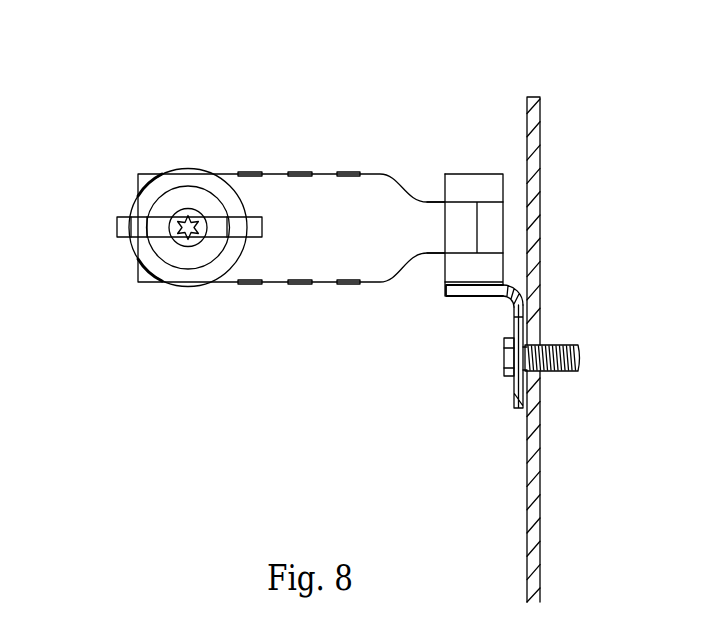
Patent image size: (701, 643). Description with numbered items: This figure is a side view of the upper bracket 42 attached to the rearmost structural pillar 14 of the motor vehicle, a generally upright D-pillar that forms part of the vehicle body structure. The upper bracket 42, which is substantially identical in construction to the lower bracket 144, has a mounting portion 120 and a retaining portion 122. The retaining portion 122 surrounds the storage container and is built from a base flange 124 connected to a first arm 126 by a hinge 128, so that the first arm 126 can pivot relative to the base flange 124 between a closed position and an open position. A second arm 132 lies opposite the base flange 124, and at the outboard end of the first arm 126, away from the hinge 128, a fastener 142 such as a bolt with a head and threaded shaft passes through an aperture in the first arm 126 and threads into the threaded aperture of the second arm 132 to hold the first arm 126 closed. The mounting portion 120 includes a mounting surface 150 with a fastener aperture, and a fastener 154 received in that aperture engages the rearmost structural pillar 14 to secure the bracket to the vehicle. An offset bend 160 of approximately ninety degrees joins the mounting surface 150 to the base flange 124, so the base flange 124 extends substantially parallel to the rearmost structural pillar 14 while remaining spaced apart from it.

The rearmost structural pillar 14 is at (540, 232).
The upper bracket 42 is at (271, 171).
The mounting portion 120 is at (501, 348).
The retaining portion 122 is at (327, 159).
The base flange 124 is at (498, 223).
The first arm 126 is at (273, 177).
The hinge 128 is at (463, 177).
The second arm 132 is at (138, 273).
The fastener 142 is at (118, 221).
The lower bracket 144 is at (133, 252).
The mounting surface 150 is at (540, 403).
The fastener 154 is at (503, 352).
The offset bend 160 is at (522, 290).